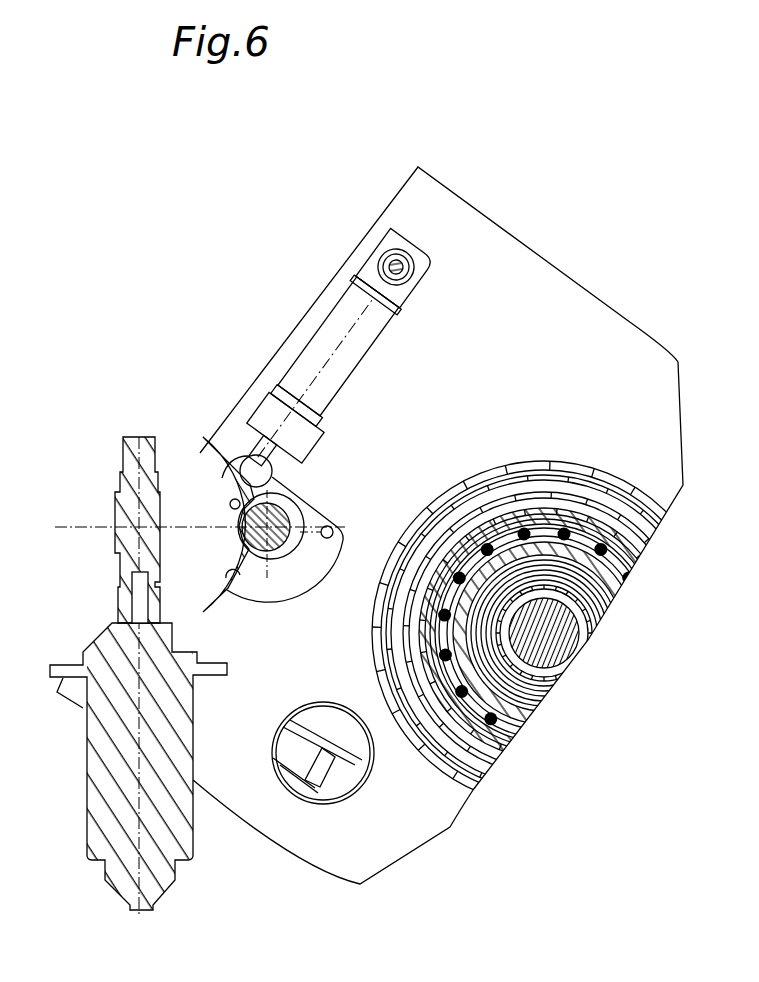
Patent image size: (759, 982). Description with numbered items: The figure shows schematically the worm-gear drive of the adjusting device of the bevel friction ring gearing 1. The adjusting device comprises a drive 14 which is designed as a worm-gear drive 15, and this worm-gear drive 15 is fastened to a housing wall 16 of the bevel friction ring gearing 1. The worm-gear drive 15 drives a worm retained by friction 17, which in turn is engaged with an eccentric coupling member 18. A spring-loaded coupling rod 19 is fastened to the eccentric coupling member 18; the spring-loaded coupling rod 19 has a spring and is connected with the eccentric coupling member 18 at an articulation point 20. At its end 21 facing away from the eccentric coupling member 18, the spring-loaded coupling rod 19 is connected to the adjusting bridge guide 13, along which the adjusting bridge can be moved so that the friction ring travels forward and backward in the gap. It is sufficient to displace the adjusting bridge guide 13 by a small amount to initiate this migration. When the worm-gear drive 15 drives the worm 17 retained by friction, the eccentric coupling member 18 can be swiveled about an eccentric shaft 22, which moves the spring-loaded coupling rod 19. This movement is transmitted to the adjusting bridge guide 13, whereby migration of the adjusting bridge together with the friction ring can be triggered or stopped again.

The bevel friction ring gearing 1 is at (634, 108).
The adjusting bridge guide 13 is at (396, 267).
The drive 14 is at (128, 205).
The worm-gear drive 15 is at (93, 817).
The housing wall 16 is at (340, 860).
The worm retained by friction 17 is at (118, 500).
The eccentric coupling member 18 is at (190, 458).
The spring-loaded coupling rod 19 is at (337, 355).
The articulation point 20 is at (234, 500).
The end 21 is at (393, 270).
The eccentric shaft 22 is at (275, 545).